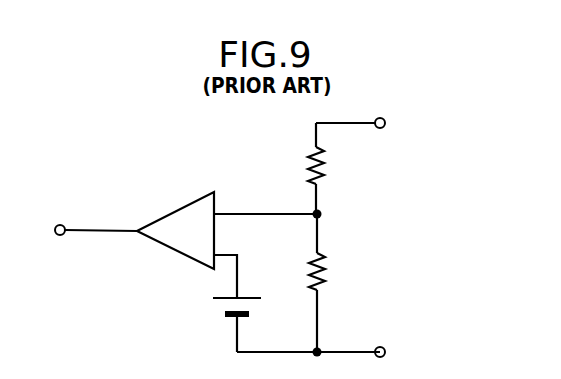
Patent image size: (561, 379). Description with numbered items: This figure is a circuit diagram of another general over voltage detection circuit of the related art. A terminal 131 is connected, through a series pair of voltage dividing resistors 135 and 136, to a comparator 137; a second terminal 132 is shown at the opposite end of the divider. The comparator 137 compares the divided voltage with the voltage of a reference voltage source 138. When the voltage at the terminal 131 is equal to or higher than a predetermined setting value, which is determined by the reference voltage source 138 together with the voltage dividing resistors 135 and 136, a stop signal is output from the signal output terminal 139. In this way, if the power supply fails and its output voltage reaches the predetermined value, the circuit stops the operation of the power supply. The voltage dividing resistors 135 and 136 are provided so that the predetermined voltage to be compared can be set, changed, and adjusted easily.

The terminal 131 is at (385, 123).
The negative supply voltage terminal (-V) 132 is at (385, 352).
The voltage dividing resistor 135 is at (325, 170).
The voltage dividing resistor 136 is at (327, 278).
The comparator 137 is at (176, 212).
The reference voltage source 138 is at (220, 306).
The signal output terminal 139 is at (57, 227).